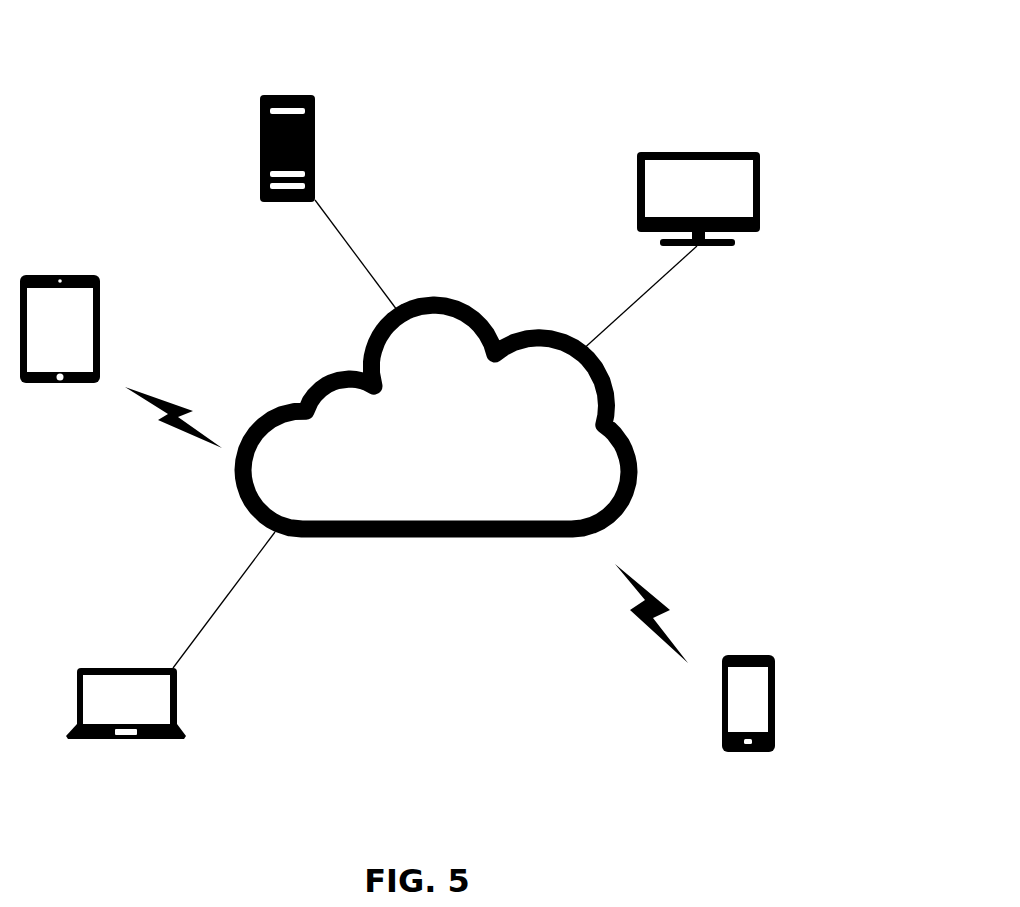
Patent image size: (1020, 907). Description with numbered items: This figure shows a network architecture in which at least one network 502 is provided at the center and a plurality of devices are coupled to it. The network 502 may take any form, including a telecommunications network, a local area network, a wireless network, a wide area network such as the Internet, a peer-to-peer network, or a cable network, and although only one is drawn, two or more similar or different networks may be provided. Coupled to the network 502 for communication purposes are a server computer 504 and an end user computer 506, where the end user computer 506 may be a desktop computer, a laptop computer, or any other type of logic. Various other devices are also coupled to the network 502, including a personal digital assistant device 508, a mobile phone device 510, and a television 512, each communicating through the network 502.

The network 502 is at (447, 538).
The server computer 504 is at (285, 93).
The end user computer 506 is at (122, 668).
The personal digital assistant (PDA) device 508 is at (62, 275).
The mobile phone device 510 is at (740, 655).
The television 512 is at (703, 152).